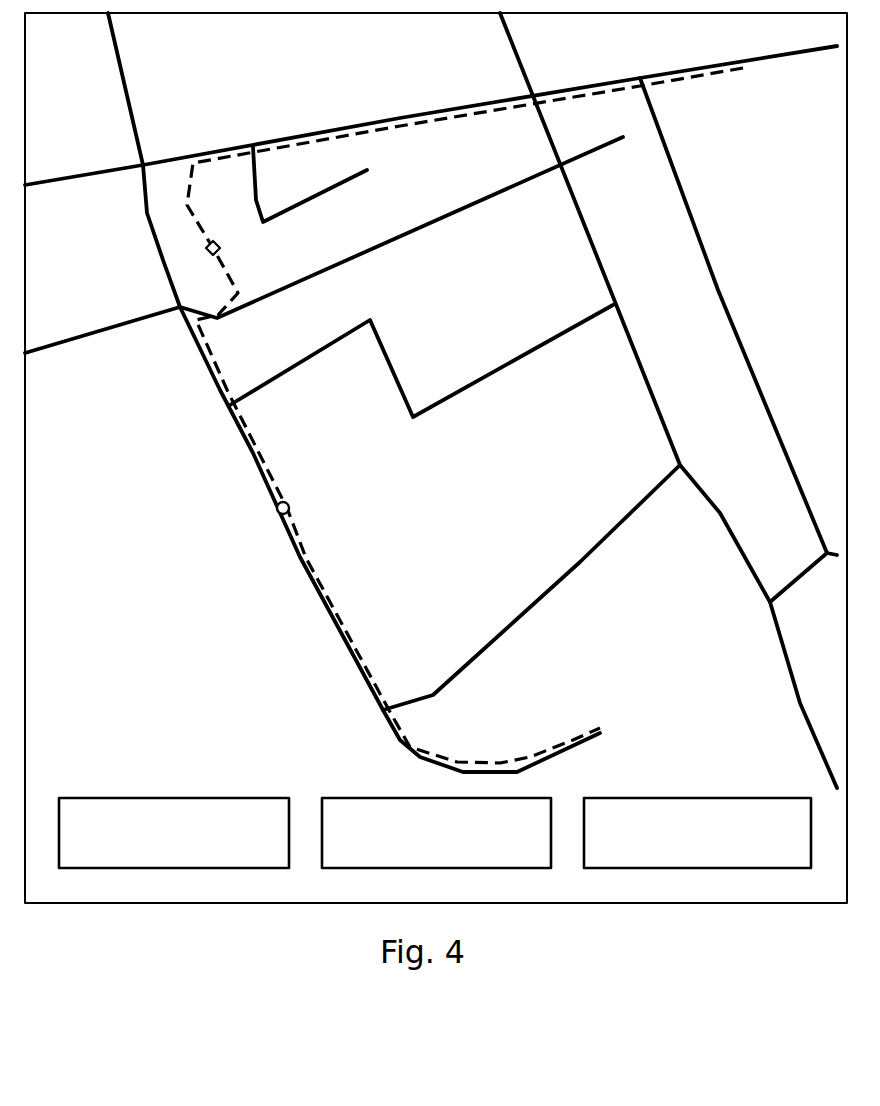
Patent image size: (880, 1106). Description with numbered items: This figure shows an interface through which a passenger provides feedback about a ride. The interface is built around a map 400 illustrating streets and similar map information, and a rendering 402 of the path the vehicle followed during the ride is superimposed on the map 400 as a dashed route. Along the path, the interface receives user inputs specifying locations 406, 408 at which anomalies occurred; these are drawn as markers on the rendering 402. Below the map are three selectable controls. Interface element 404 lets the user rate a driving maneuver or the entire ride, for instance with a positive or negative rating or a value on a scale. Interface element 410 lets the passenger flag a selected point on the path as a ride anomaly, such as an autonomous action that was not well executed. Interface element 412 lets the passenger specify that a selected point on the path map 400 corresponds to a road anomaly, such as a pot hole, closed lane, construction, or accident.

The map 400 is at (130, 498).
The rendering of a path of the vehicle 402 is at (415, 122).
The interface element 404 is at (275, 847).
The location 406 is at (207, 249).
The location 408 is at (278, 513).
The interface element 410 is at (417, 861).
The interface element 412 is at (679, 861).